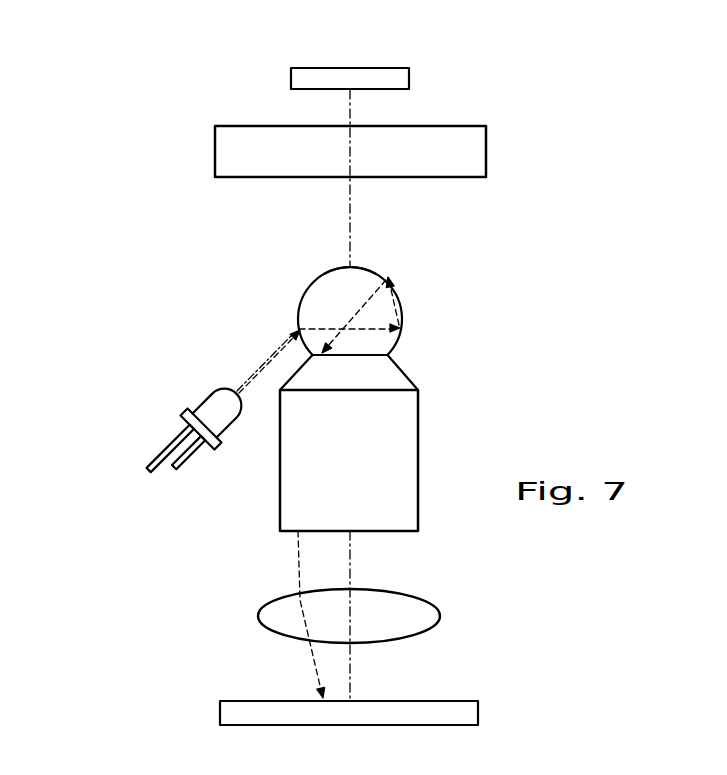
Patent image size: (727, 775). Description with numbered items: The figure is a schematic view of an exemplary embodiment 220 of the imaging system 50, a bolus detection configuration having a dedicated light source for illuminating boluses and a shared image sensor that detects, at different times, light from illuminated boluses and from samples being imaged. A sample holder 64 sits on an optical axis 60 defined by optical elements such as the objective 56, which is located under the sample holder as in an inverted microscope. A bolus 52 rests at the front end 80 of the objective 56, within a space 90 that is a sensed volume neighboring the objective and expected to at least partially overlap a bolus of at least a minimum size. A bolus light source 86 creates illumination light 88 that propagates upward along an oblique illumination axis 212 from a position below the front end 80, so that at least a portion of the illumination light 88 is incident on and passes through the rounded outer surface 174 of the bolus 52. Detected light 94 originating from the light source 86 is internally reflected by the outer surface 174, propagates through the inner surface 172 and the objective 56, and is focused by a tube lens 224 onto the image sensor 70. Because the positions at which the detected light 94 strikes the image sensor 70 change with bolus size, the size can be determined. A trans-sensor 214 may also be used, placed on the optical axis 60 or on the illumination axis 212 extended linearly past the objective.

The imaging system 50 is at (100, 138).
The exemplary embodiment 220 is at (118, 197).
The trans-sensor 214 is at (325, 68).
The sample holder 64 is at (260, 126).
The optical axis 60 is at (350, 205).
The rounded outer surface 174 is at (340, 267).
The bolus 52 is at (323, 272).
The space 90 is at (286, 286).
The detected light 94 is at (366, 300).
The front end 80 is at (370, 355).
The inner surface 172 is at (358, 357).
The objective 56 is at (280, 462).
The illumination light 88 is at (272, 357).
The illumination axis 212 is at (255, 386).
The bolus light source 86 is at (212, 390).
The tube lens 224 is at (393, 590).
The image sensor 70 is at (292, 700).